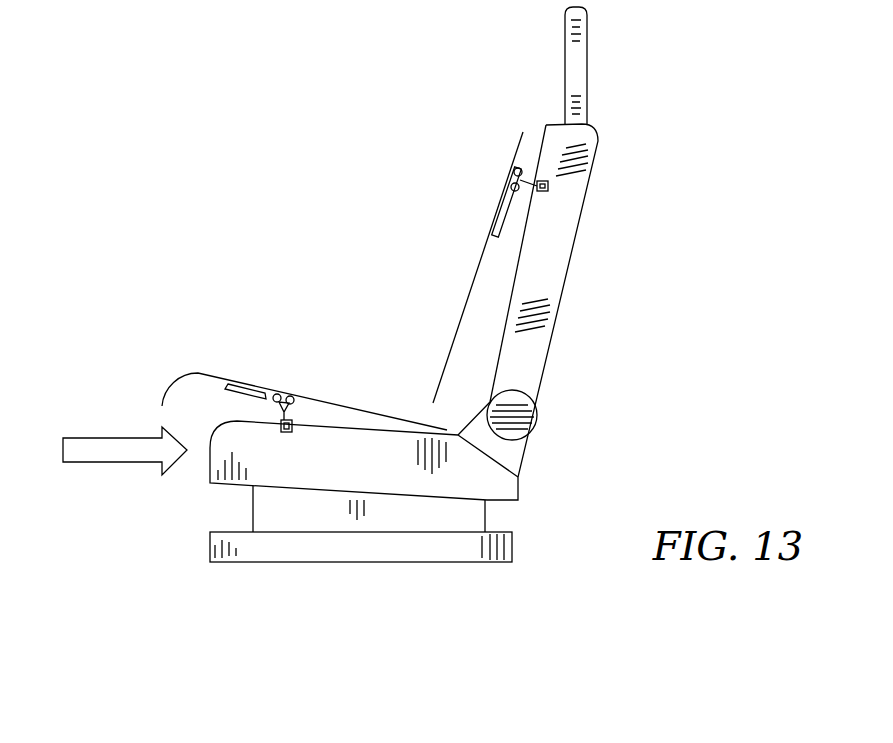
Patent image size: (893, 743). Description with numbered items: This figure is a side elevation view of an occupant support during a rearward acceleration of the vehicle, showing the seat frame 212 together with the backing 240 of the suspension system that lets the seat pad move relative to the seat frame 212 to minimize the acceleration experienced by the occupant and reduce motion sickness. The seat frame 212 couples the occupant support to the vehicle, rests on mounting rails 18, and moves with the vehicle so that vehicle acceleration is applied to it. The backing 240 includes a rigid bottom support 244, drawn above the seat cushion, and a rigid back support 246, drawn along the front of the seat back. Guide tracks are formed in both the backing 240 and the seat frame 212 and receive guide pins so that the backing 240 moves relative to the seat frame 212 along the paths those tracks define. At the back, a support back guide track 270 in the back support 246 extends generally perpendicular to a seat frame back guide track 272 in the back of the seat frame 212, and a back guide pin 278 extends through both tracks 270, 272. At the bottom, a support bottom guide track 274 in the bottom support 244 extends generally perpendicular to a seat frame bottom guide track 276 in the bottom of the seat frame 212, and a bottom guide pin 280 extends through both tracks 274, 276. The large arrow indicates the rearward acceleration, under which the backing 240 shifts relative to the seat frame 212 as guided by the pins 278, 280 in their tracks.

The mounting rails 18 is at (380, 566).
The seat frame 212 is at (607, 156).
The backing 240 is at (523, 127).
The bottom support 244 is at (157, 383).
The back support 246 is at (478, 285).
The support back guide track 270 is at (498, 210).
The seat frame back guide track 272 is at (560, 187).
The support bottom guide track 274 is at (250, 383).
The seat frame bottom guide track 276 is at (285, 437).
The back guide pin 278 is at (538, 150).
The bottom guide pin 280 is at (293, 417).